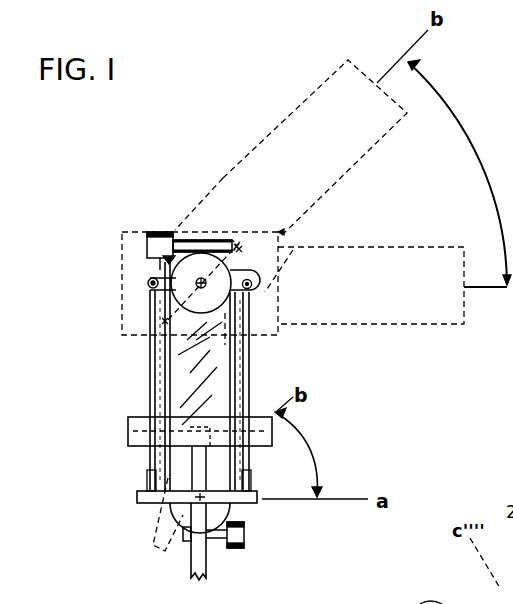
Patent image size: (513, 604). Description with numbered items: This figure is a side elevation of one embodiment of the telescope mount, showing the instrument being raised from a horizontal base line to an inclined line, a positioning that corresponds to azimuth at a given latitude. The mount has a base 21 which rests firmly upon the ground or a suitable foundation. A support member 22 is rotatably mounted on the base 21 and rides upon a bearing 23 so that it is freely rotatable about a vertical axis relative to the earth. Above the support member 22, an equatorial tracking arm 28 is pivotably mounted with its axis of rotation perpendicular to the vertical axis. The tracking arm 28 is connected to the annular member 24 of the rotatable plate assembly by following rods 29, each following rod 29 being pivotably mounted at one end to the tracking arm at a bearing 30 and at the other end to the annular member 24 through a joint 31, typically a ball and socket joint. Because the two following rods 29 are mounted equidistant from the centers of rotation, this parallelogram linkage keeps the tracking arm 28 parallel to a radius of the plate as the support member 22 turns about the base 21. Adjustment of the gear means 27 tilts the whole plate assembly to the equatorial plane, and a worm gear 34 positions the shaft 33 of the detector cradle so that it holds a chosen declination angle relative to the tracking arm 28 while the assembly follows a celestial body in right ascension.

The base 21 is at (200, 543).
The support member 22 is at (190, 373).
The bearing 23 is at (200, 437).
The annular member 24 is at (247, 505).
The gear means 27 is at (212, 522).
The equatorial tracking arm 28 is at (160, 290).
The following rod 29 is at (150, 354).
The bearing 30 is at (201, 283).
The joint 31 is at (147, 490).
The shaft 33 is at (148, 276).
The worm gear 34 is at (172, 243).